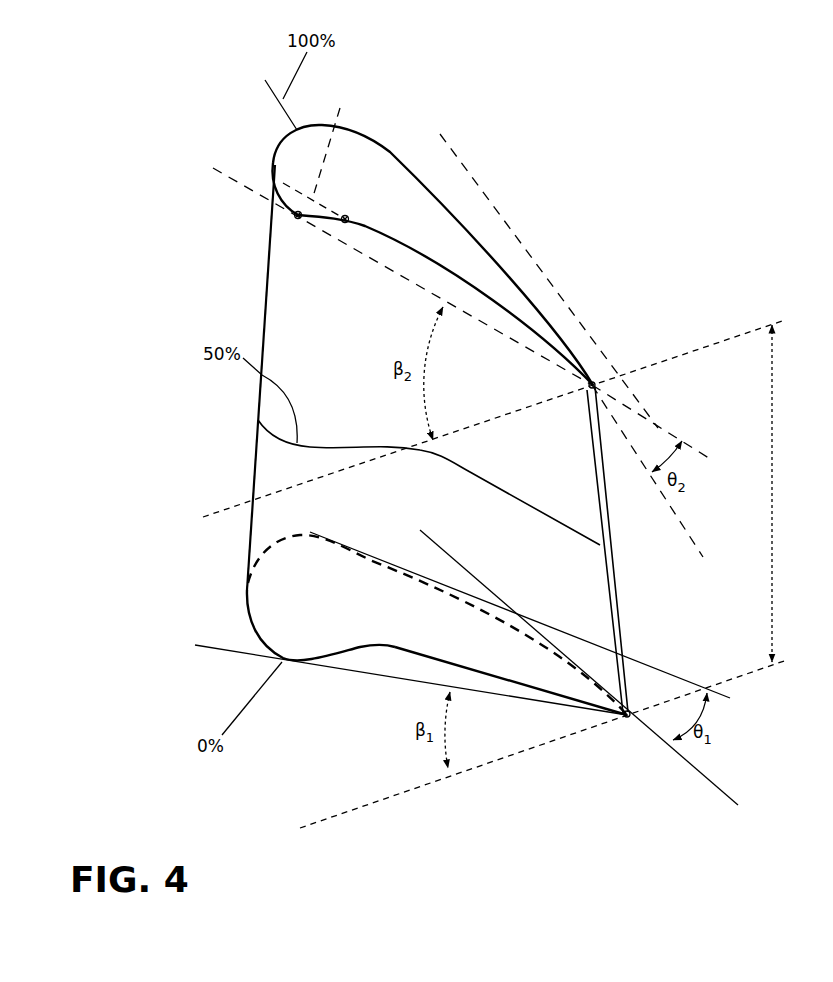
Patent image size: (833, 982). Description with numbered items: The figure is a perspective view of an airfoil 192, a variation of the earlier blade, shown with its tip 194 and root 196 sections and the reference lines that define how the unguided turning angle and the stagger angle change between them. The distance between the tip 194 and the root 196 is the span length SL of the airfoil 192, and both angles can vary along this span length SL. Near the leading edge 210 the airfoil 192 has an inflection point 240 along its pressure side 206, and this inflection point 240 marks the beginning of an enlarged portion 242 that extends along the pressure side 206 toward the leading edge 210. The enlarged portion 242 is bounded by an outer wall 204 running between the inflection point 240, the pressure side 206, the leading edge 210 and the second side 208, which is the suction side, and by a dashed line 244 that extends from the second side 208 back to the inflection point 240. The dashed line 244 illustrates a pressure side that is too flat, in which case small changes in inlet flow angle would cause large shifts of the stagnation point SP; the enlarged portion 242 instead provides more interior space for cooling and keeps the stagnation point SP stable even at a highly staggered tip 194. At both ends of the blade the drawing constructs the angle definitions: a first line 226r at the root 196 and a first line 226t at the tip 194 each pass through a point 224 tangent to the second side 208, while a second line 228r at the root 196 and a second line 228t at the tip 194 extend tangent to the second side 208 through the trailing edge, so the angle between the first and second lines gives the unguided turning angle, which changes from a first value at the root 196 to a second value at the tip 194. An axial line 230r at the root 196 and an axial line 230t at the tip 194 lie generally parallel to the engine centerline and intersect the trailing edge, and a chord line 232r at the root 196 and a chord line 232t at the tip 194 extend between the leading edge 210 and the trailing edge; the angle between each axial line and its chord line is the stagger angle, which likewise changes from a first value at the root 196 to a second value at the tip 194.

The airfoil 192 is at (428, 227).
The tip 194 is at (473, 293).
The root 196 is at (477, 670).
The outer wall 204 is at (317, 293).
The pressure side 206 is at (390, 647).
The second side 208 is at (382, 148).
The leading edge 210 is at (296, 217).
The point 224 is at (457, 215).
The first line 226t is at (650, 421).
The first line 226r is at (653, 667).
The second line 228t is at (690, 533).
The second line 228r is at (672, 748).
The axial line 230t is at (238, 510).
The axial line 230r is at (358, 813).
The chord line 232t is at (222, 168).
The chord line 232r is at (222, 650).
The inflection point 240 is at (345, 215).
The enlarged portion 242 is at (284, 182).
The dashed line 244 is at (331, 145).
The stagnation point SP is at (294, 215).
The span length SL is at (785, 493).